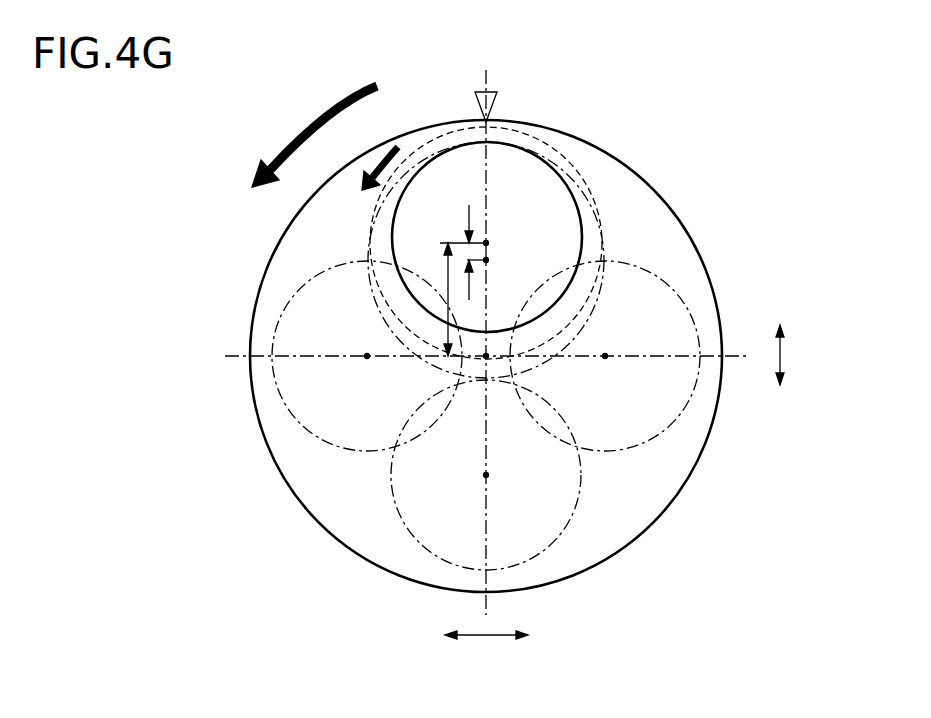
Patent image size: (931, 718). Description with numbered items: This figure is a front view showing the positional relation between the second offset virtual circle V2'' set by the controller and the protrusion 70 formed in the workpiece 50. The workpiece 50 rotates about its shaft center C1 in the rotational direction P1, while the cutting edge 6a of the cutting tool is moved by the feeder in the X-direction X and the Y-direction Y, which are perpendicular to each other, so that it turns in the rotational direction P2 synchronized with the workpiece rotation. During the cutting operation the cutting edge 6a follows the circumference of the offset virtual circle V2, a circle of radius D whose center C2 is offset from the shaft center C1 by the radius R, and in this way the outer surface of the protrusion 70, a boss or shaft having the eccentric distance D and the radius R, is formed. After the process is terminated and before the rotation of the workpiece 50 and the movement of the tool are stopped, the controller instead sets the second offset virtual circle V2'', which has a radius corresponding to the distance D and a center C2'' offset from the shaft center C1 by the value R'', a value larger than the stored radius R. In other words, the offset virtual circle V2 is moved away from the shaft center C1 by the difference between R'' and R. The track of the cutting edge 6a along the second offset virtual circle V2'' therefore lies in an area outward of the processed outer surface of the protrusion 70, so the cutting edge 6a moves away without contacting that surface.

The workpiece 50 is at (682, 220).
The protrusion 70 is at (453, 177).
The cutting edge 6a is at (485, 126).
The shaft center C1 is at (486, 356).
The center of the offset virtual circle C2 is at (573, 185).
The center of the second offset virtual circle C2'' is at (495, 153).
The value R'' is at (317, 299).
The offset virtual circle V2 is at (581, 260).
The second offset virtual circle V2'' is at (589, 243).
The rotational direction P1 is at (315, 118).
The rotational direction P2 is at (397, 150).
The X-direction X is at (486, 641).
The Y-direction Y is at (792, 350).